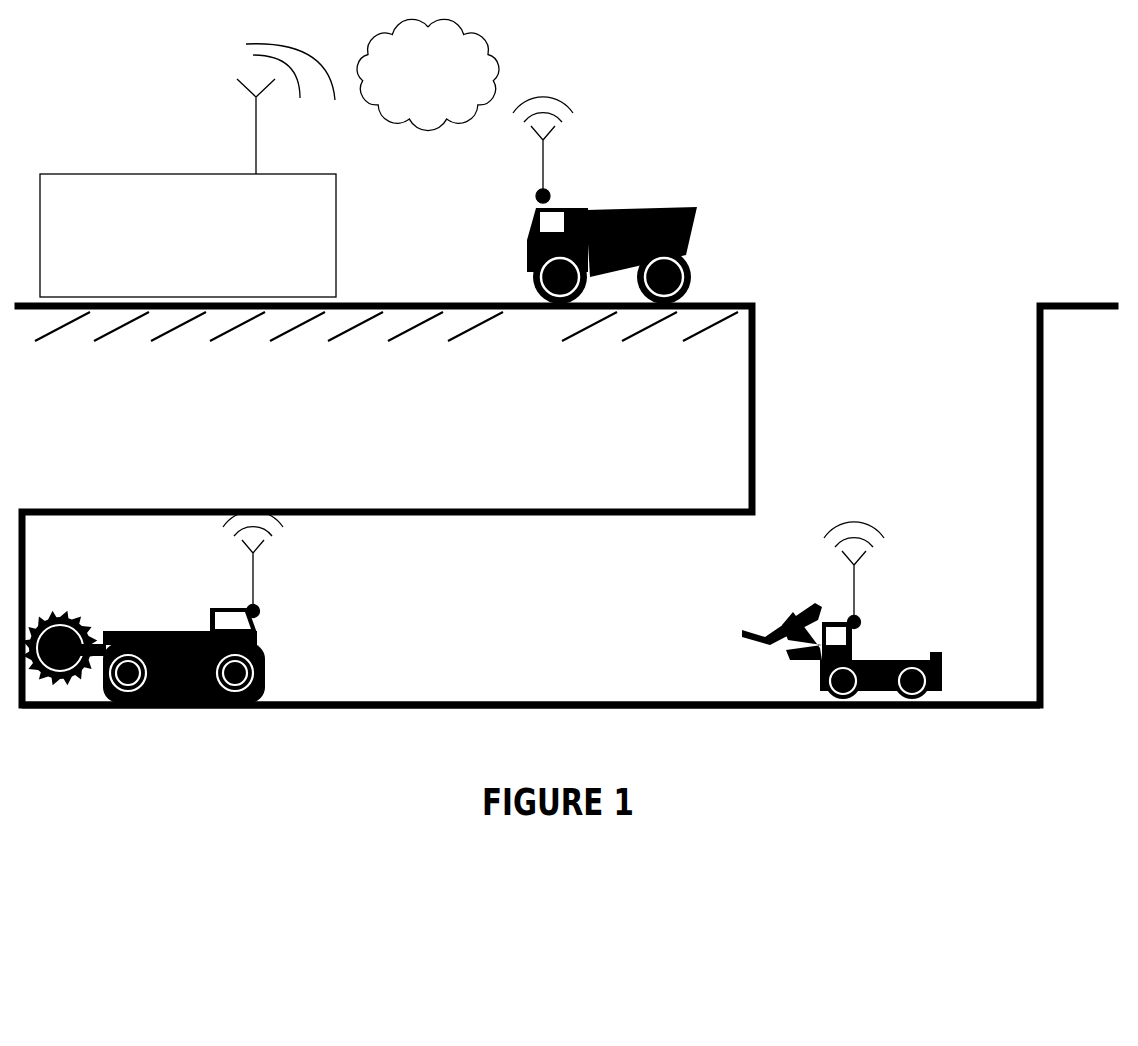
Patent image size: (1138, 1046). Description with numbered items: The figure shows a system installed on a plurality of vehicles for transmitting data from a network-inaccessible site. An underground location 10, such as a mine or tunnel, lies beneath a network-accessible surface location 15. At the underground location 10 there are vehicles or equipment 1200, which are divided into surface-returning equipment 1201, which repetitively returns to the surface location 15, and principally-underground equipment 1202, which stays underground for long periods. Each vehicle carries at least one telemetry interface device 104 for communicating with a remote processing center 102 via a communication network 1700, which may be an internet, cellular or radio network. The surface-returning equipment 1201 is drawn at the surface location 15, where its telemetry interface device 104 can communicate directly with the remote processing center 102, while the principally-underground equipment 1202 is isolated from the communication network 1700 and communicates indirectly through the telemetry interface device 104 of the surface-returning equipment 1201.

The equipment 1200 is at (803, 198).
The surface-returning equipment 1201 is at (570, 318).
The principally-underground equipment 1202 is at (160, 715).
The underground location 10 is at (637, 551).
The surface location 15 is at (890, 283).
The remote processing center 102 is at (94, 169).
The telemetry interface device 104 is at (551, 191).
The communication network 1700 is at (428, 74).